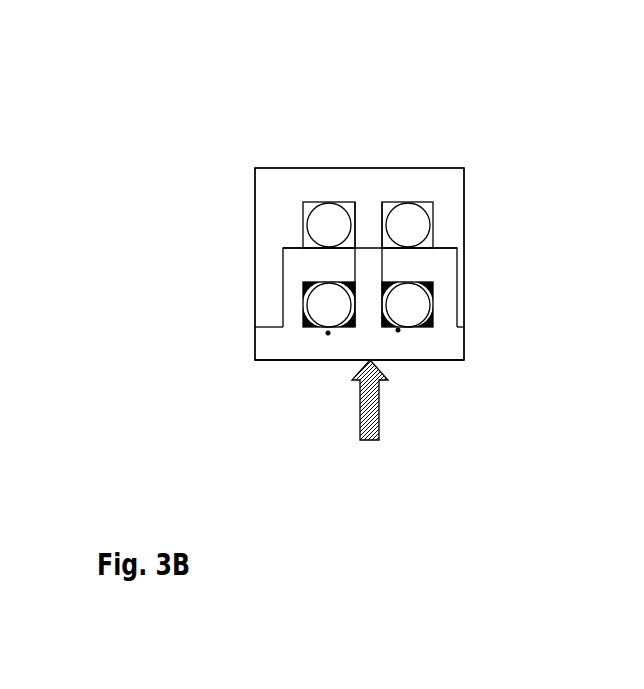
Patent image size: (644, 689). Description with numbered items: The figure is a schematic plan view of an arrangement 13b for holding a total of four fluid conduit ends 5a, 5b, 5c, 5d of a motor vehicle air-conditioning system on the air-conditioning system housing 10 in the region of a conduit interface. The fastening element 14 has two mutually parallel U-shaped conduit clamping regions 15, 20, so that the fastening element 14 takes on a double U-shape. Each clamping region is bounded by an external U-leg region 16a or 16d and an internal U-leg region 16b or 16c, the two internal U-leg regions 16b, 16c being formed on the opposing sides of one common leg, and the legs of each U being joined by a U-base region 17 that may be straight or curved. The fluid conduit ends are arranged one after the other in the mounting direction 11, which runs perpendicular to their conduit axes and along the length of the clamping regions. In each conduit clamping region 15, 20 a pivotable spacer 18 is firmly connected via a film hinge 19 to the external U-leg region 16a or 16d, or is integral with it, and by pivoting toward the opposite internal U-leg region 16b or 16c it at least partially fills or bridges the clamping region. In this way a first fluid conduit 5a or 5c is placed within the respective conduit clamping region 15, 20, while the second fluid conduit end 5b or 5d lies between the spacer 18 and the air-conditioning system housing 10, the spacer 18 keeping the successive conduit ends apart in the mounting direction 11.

The arrangement 13b is at (359, 195).
The air-conditioning system housing 10 is at (426, 182).
The fastening element 14 is at (427, 323).
The pivotable spacer 18 is at (330, 260).
The film hinge 19 is at (305, 267).
The first U-leg region 16a is at (300, 307).
The second U-leg region 16b is at (356, 250).
The internal U-leg region 16c is at (385, 275).
The external U-leg region 16d is at (432, 286).
The fluid conduit 5a is at (313, 296).
The fluid conduit end 5b is at (314, 226).
The fluid conduit 5c is at (420, 305).
The fluid conduit end 5d is at (413, 213).
The U-shaped conduit clamping region 15 is at (306, 327).
The U-shaped conduit clamping region 20 is at (434, 325).
The U-base region 17 is at (328, 333).
The mounting direction 11 is at (362, 440).